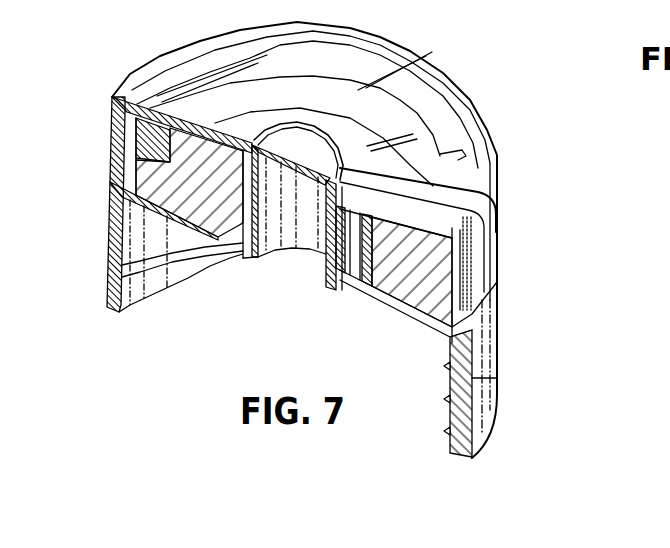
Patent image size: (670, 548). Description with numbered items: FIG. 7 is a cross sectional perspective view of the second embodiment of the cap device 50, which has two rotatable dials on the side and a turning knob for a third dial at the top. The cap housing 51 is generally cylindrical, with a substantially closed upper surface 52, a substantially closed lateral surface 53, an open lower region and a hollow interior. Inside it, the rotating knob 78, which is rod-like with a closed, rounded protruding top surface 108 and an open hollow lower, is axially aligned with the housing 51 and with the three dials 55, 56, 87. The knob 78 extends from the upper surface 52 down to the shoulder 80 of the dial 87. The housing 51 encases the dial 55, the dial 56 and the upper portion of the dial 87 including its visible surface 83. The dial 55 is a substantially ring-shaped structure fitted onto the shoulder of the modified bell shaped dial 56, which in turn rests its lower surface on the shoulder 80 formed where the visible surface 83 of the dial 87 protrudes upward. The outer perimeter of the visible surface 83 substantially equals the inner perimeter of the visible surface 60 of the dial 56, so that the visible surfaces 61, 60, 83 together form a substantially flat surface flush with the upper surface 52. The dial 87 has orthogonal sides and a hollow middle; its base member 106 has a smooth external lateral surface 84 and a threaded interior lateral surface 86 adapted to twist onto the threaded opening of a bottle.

The dose indicator cap assembly 50 is at (574, 237).
The cap housing 51 is at (152, 66).
The upper surface 52 is at (284, 104).
The lateral surface 53 is at (113, 127).
The dial 55 is at (483, 155).
The dial 56 is at (483, 282).
The visible surface 60 is at (378, 216).
The visible surface 61 is at (422, 236).
The rotating knob 78 is at (273, 253).
The shoulder 80 is at (468, 306).
The visible surface 83 is at (327, 253).
The external lateral surface 84 is at (470, 393).
The threaded interior lateral surface 86 is at (108, 277).
The dial 87 is at (531, 366).
The base member 106 is at (112, 219).
The top surface 108 is at (320, 150).